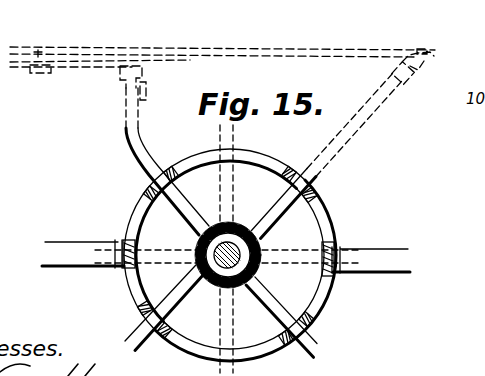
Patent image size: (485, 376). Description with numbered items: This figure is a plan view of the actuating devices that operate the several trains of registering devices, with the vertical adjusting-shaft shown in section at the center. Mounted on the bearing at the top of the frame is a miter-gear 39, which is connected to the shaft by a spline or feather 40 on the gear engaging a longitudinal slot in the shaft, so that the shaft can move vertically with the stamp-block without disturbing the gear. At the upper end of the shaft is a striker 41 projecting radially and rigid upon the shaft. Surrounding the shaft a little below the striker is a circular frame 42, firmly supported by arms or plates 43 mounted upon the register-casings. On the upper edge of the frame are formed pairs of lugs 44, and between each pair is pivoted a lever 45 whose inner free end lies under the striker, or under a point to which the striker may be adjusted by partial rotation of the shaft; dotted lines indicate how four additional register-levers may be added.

The miter-gear 39 is at (258, 249).
The spline or feather 40 is at (203, 262).
The striker 41 is at (263, 231).
The frame 42 is at (318, 230).
The arms or plates 43 is at (319, 179).
The lugs 44 is at (318, 155).
The lever 45 is at (311, 347).